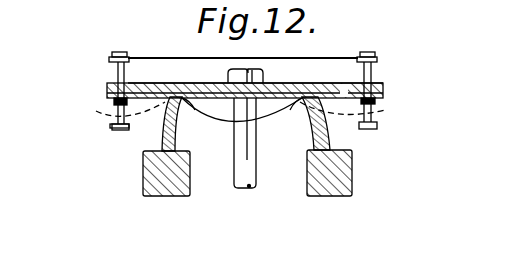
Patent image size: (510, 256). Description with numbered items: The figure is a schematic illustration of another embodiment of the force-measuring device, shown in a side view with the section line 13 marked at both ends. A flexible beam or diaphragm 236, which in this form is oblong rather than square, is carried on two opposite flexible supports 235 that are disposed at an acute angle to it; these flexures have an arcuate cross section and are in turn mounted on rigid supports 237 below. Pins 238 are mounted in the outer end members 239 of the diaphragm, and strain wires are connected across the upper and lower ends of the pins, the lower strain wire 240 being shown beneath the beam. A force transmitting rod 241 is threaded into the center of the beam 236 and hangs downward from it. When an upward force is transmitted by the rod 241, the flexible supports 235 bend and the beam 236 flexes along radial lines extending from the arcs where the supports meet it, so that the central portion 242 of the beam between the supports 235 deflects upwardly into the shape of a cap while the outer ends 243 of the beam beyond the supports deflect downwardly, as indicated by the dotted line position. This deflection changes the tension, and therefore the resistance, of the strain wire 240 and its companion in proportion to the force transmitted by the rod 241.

The section line 13- 13 is at (100, 112).
The flexible supports 235 is at (183, 117).
The flexible beam or diaphragm 236 is at (300, 80).
The rigid supports 237 is at (313, 195).
The pins 238 is at (110, 70).
The outer end members 239 is at (181, 12).
The strain wire 240 is at (138, 128).
The force transmitting rod 241 is at (255, 160).
The central portion of the beam 242 is at (205, 81).
The outer ends of the beam 243 is at (345, 79).